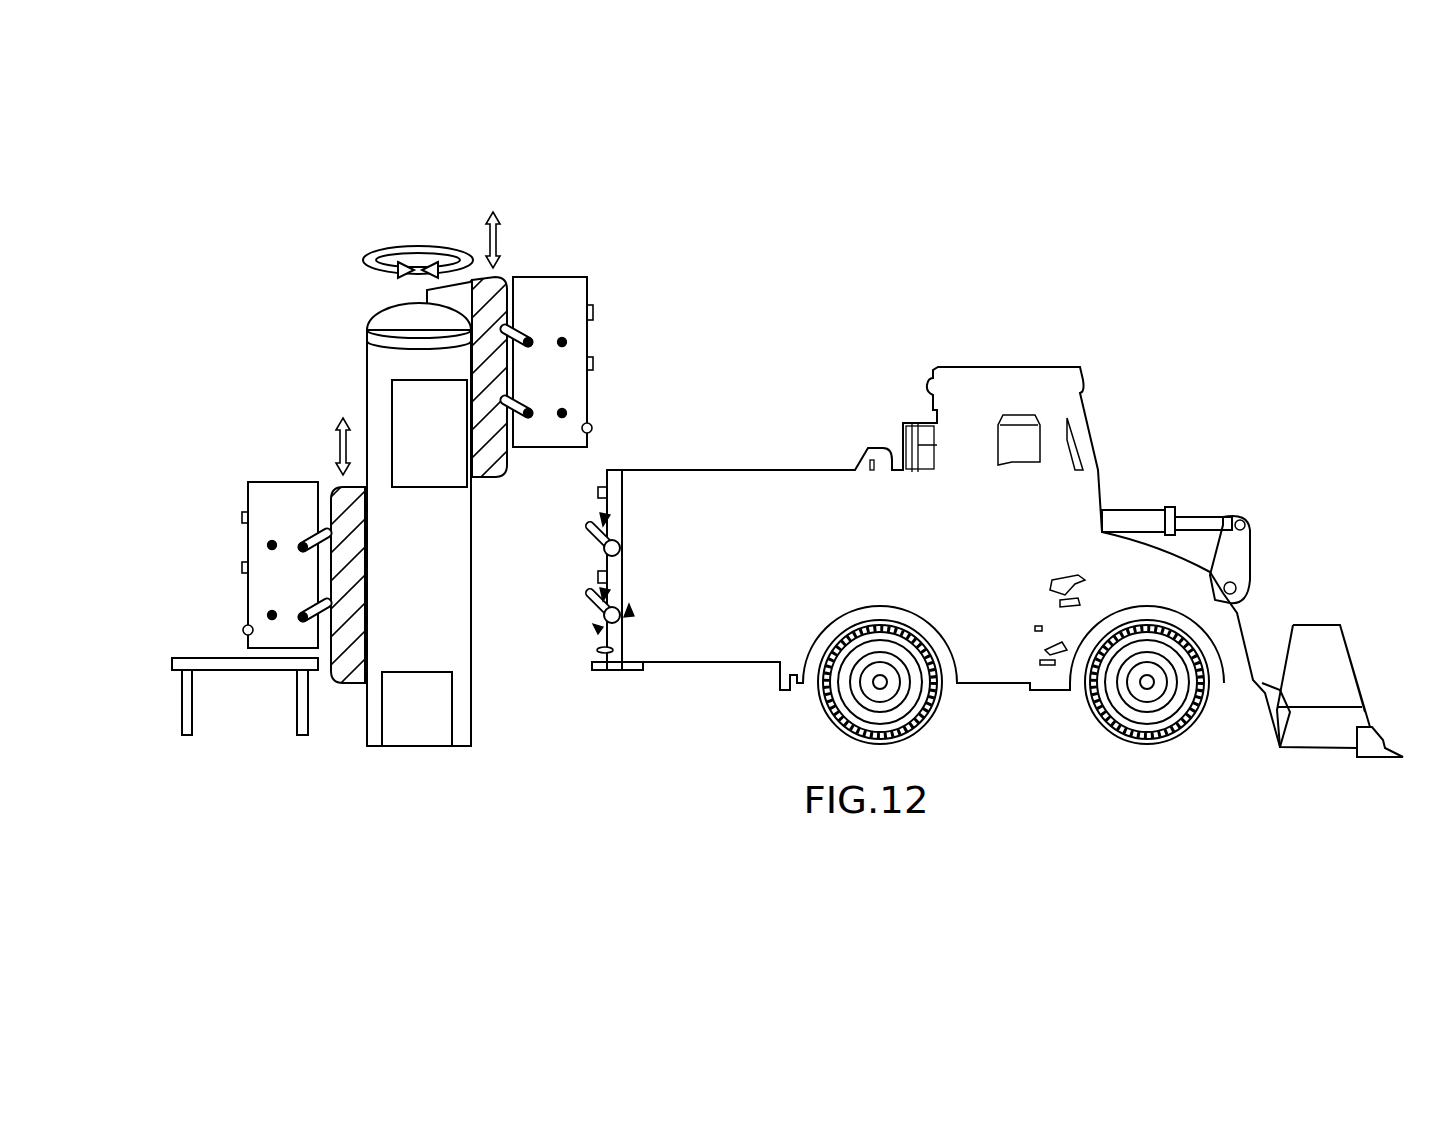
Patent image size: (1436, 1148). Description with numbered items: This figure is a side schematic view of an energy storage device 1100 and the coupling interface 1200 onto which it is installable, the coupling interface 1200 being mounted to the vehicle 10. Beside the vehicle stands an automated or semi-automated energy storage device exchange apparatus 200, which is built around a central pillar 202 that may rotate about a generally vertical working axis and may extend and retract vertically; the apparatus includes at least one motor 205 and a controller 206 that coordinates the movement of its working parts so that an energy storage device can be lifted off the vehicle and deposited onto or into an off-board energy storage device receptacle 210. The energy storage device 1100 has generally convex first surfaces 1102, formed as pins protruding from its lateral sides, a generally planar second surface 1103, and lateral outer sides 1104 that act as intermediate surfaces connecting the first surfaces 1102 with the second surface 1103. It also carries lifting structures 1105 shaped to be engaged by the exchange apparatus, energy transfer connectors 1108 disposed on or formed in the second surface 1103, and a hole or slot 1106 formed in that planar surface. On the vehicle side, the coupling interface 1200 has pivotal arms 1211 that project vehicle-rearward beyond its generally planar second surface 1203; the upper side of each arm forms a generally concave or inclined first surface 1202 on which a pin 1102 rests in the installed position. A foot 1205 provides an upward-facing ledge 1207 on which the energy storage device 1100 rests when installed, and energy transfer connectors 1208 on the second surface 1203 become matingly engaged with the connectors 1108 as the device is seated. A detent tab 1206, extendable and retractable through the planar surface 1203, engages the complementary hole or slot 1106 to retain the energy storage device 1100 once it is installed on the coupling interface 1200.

The vehicle 10 is at (755, 556).
The energy storage device exchange apparatus 200 is at (423, 228).
The central pillar 202 is at (400, 534).
The motor 205 is at (398, 720).
The controller 206 is at (400, 450).
The energy storage device receptacle 210 is at (172, 672).
The energy storage device 1100 is at (522, 264).
The first surfaces 1102 is at (566, 342).
The second surface 1103 is at (588, 345).
The lateral outer sides 1104 is at (578, 386).
The lifting structures 1105 is at (530, 336).
The hole or slot 1106 is at (588, 428).
The energy transfer connectors 1108 is at (590, 309).
The coupling interface 1200 is at (623, 561).
The first surface 1202 is at (605, 592).
The second surface 1203 is at (604, 553).
The foot 1205 is at (615, 672).
The detent tab 1206 is at (598, 648).
The ledge 1207 is at (594, 664).
The energy transfer connectors 1208 is at (598, 492).
The pivotal arms 1211 is at (628, 616).